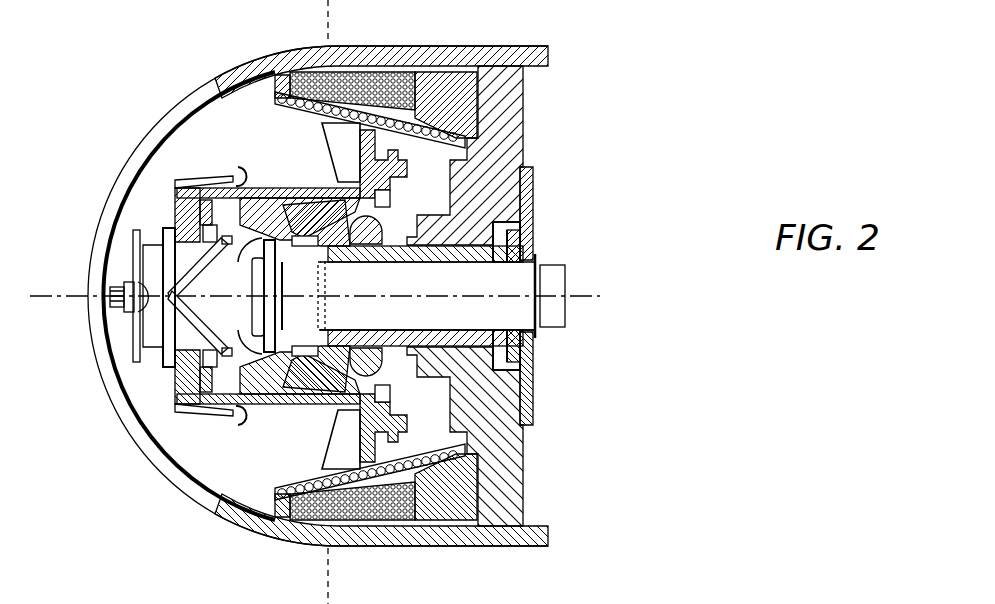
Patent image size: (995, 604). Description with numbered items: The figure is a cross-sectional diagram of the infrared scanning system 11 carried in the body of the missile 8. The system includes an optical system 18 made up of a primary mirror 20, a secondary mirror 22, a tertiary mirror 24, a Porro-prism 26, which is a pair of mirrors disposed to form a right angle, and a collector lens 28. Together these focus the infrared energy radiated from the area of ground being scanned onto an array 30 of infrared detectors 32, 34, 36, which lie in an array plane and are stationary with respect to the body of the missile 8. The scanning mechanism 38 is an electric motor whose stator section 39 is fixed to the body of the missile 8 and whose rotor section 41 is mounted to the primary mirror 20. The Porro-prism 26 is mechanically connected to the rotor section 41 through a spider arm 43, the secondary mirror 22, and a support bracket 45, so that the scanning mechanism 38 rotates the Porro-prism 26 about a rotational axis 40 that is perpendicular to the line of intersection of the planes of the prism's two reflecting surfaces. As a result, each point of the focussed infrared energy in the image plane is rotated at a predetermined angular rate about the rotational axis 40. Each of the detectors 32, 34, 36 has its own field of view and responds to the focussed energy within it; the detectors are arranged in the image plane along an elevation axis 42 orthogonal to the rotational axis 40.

The missile 8 is at (440, 46).
The infrared scanning system 11 is at (540, 100).
The optical system 18 is at (232, 130).
The primary mirror 20 is at (335, 142).
The secondary mirror 22 is at (192, 226).
The tertiary mirror 24 is at (246, 250).
The Porro-prism 26 is at (190, 296).
The collector lens 28 is at (254, 300).
The array of infrared detectors 30 is at (322, 284).
The infrared detector 32 is at (332, 270).
The infrared detector 34 is at (334, 292).
The infrared detector 36 is at (316, 298).
The scanning mechanism 38 is at (385, 70).
The stator section 39 is at (446, 296).
The rotational axis 40 is at (40, 296).
The rotor section 41 is at (398, 180).
The elevation axis 42 is at (330, 24).
The spider arm 43 is at (237, 170).
The support bracket 45 is at (178, 190).